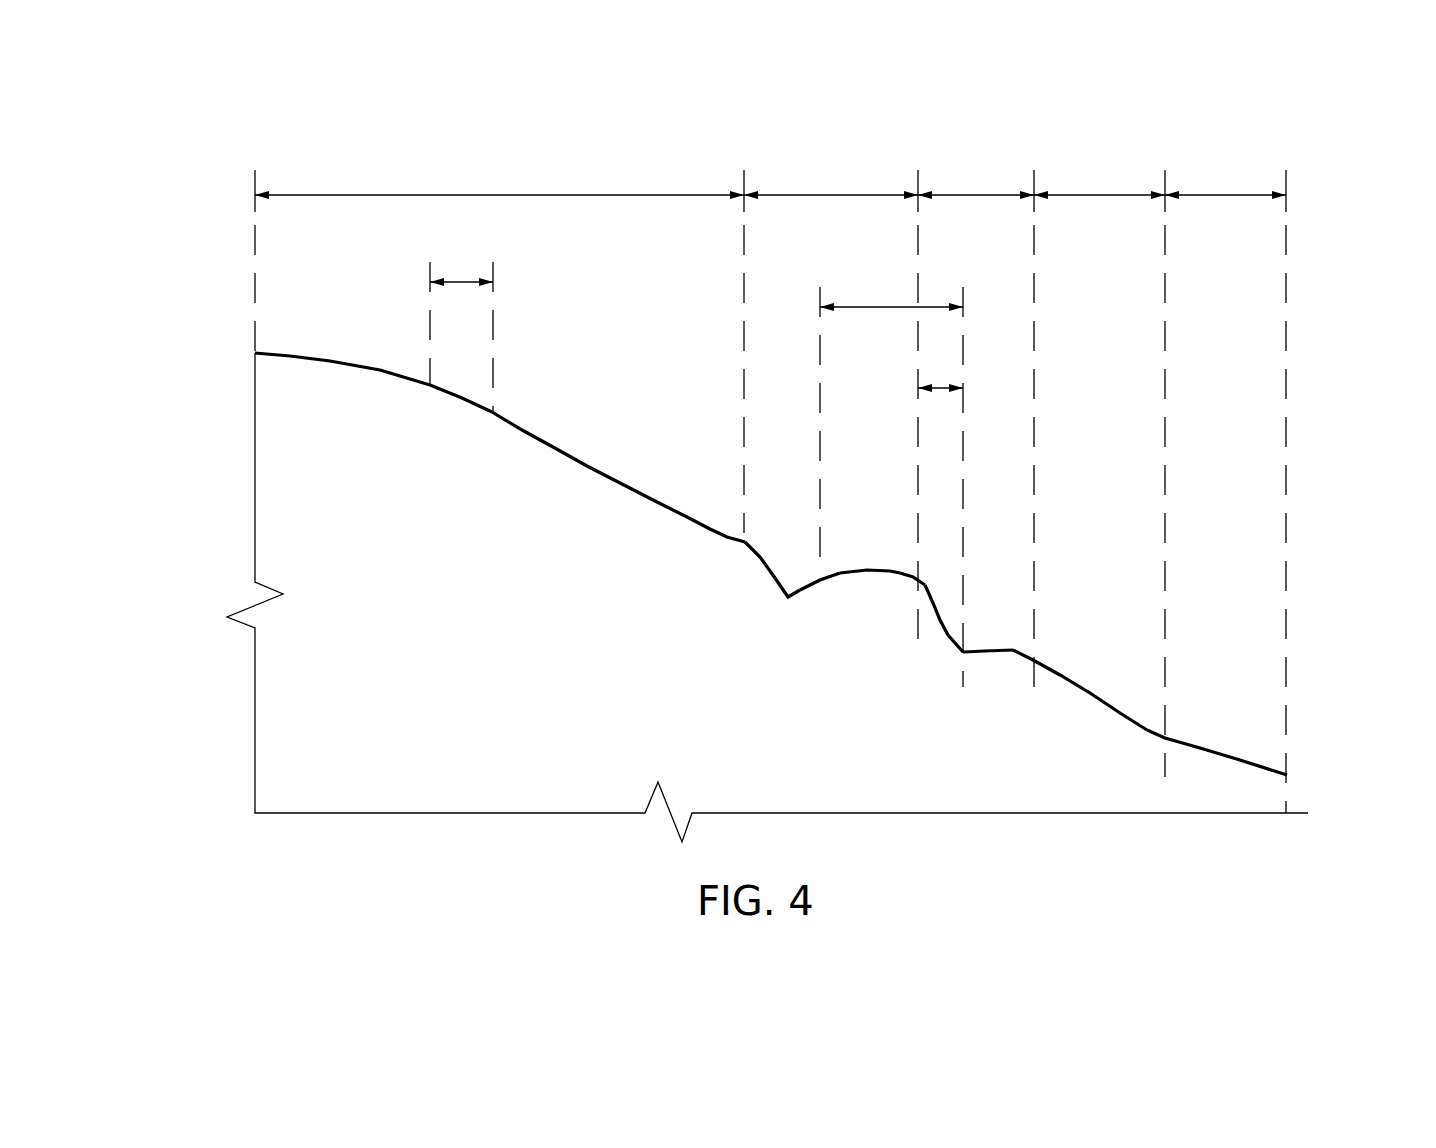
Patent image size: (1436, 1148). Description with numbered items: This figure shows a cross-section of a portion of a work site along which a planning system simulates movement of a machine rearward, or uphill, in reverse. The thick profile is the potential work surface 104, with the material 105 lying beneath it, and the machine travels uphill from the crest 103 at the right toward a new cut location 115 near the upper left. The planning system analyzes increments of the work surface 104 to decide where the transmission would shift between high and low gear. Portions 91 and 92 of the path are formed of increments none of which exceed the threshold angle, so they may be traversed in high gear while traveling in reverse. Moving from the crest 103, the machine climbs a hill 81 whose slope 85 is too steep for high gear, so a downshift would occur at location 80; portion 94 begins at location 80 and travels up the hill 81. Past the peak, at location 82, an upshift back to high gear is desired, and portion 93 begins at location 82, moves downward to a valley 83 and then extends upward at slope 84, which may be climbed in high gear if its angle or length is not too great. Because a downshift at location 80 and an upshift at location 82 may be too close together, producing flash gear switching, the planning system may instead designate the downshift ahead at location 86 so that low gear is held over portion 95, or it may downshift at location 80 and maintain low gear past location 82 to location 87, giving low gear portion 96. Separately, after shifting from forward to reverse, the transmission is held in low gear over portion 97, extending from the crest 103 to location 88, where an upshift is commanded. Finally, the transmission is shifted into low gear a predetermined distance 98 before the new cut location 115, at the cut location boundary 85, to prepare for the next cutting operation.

The location 80 is at (967, 652).
The hill 81 is at (877, 570).
The location 82 is at (915, 583).
The valley 83 is at (785, 600).
The slope 84 is at (763, 565).
The slope / cut location boundary 85 is at (492, 412).
The location 86 is at (1030, 662).
The location 87 is at (820, 583).
The location 88 is at (1163, 738).
The portion of path 91 is at (1090, 195).
The portion of path 92 is at (440, 195).
The portion of path 93 is at (820, 195).
The portion of path 94 is at (940, 388).
The portion 95 is at (965, 195).
The portion 96 is at (890, 307).
The portion 97 is at (1235, 195).
The predetermined distance 98 is at (462, 282).
The crest 103 is at (1315, 775).
The work surface 104 is at (320, 360).
The material 105 is at (308, 425).
The new cut location 115 is at (430, 383).